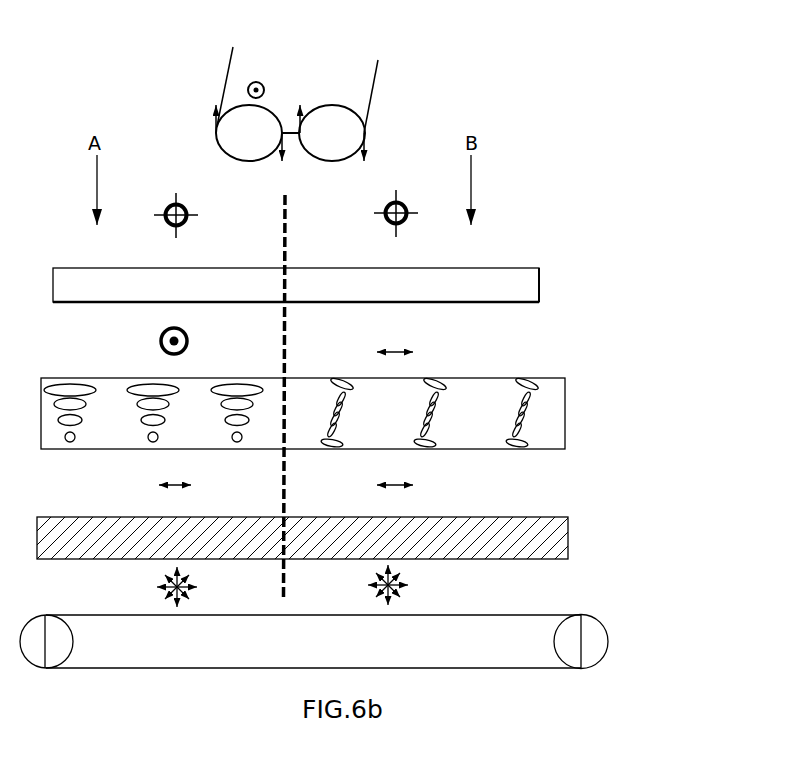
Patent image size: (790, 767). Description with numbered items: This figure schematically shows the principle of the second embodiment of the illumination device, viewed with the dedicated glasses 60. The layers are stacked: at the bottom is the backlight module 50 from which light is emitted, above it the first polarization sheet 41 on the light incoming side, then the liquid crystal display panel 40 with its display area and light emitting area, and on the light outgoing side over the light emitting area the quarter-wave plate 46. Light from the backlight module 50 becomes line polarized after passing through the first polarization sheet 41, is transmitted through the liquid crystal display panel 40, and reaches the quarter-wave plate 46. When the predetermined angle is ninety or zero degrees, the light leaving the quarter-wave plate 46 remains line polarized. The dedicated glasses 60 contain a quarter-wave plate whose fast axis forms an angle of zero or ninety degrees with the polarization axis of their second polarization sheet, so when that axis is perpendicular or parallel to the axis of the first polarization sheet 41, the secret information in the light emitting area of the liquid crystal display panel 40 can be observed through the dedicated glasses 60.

The dedicated glasses 60 is at (366, 129).
The quarter-wave plate 46 is at (540, 288).
The liquid crystal display panel 40 is at (566, 435).
The first polarization sheet 41 is at (568, 538).
The backlight module 50 is at (606, 641).